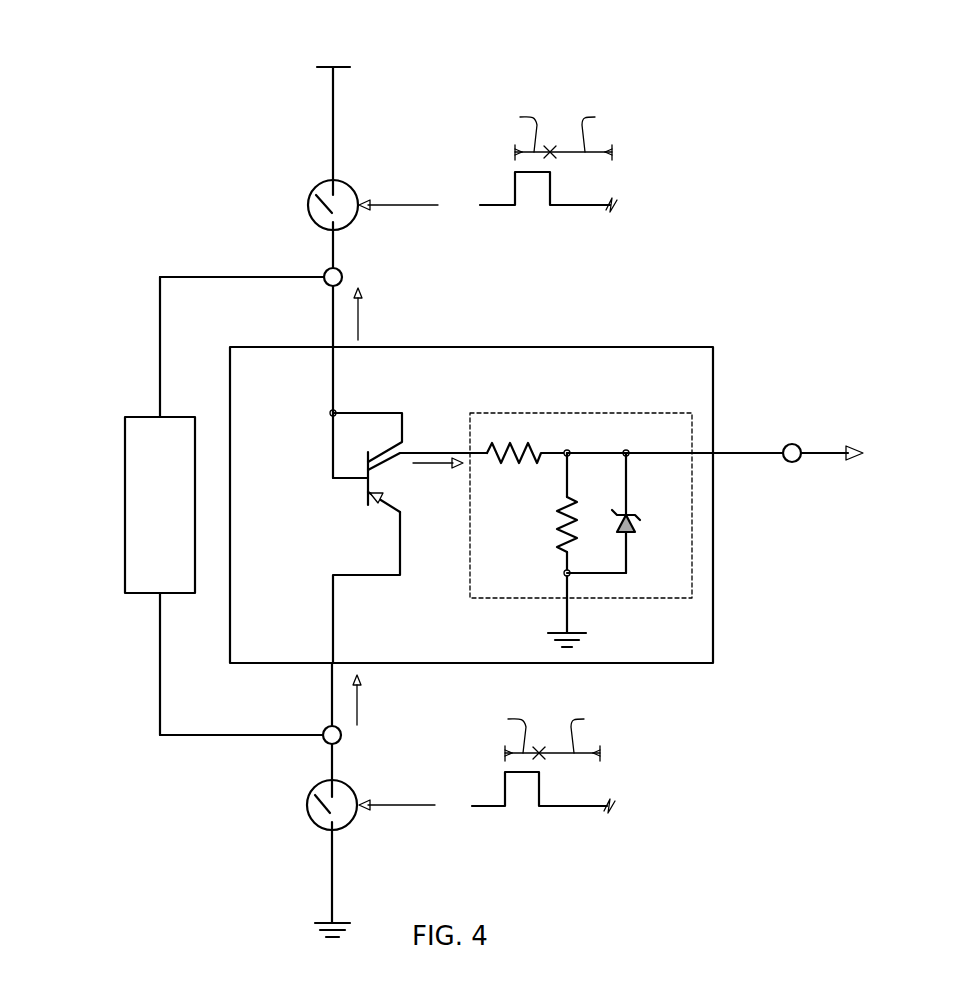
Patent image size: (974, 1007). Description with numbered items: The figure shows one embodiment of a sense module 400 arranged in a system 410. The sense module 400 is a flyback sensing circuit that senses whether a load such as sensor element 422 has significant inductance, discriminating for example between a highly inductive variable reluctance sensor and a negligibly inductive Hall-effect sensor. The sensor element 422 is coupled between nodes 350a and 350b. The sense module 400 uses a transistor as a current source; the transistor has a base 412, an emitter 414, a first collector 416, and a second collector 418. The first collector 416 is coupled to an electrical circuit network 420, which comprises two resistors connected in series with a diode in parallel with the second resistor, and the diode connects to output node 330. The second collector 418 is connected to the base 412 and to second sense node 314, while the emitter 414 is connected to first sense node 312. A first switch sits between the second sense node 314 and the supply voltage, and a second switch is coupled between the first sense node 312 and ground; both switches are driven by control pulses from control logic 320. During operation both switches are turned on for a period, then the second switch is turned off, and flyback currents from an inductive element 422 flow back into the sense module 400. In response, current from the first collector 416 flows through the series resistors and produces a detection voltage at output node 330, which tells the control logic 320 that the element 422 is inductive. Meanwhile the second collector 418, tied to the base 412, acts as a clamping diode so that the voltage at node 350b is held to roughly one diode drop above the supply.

The system 410 is at (710, 113).
The sense module 400 is at (471, 505).
The electrical circuit network 420 is at (585, 413).
The second collector 418 is at (350, 413).
The first collector 416 is at (420, 452).
The base 412 is at (347, 485).
The emitter 414 is at (393, 505).
The second sense node 314 is at (332, 312).
The first sense node 312 is at (330, 700).
The node 350a is at (325, 272).
The node 350b is at (323, 742).
The output node 330 is at (790, 462).
The sensor element 422 is at (125, 503).
The control logic 320 is at (874, 452).